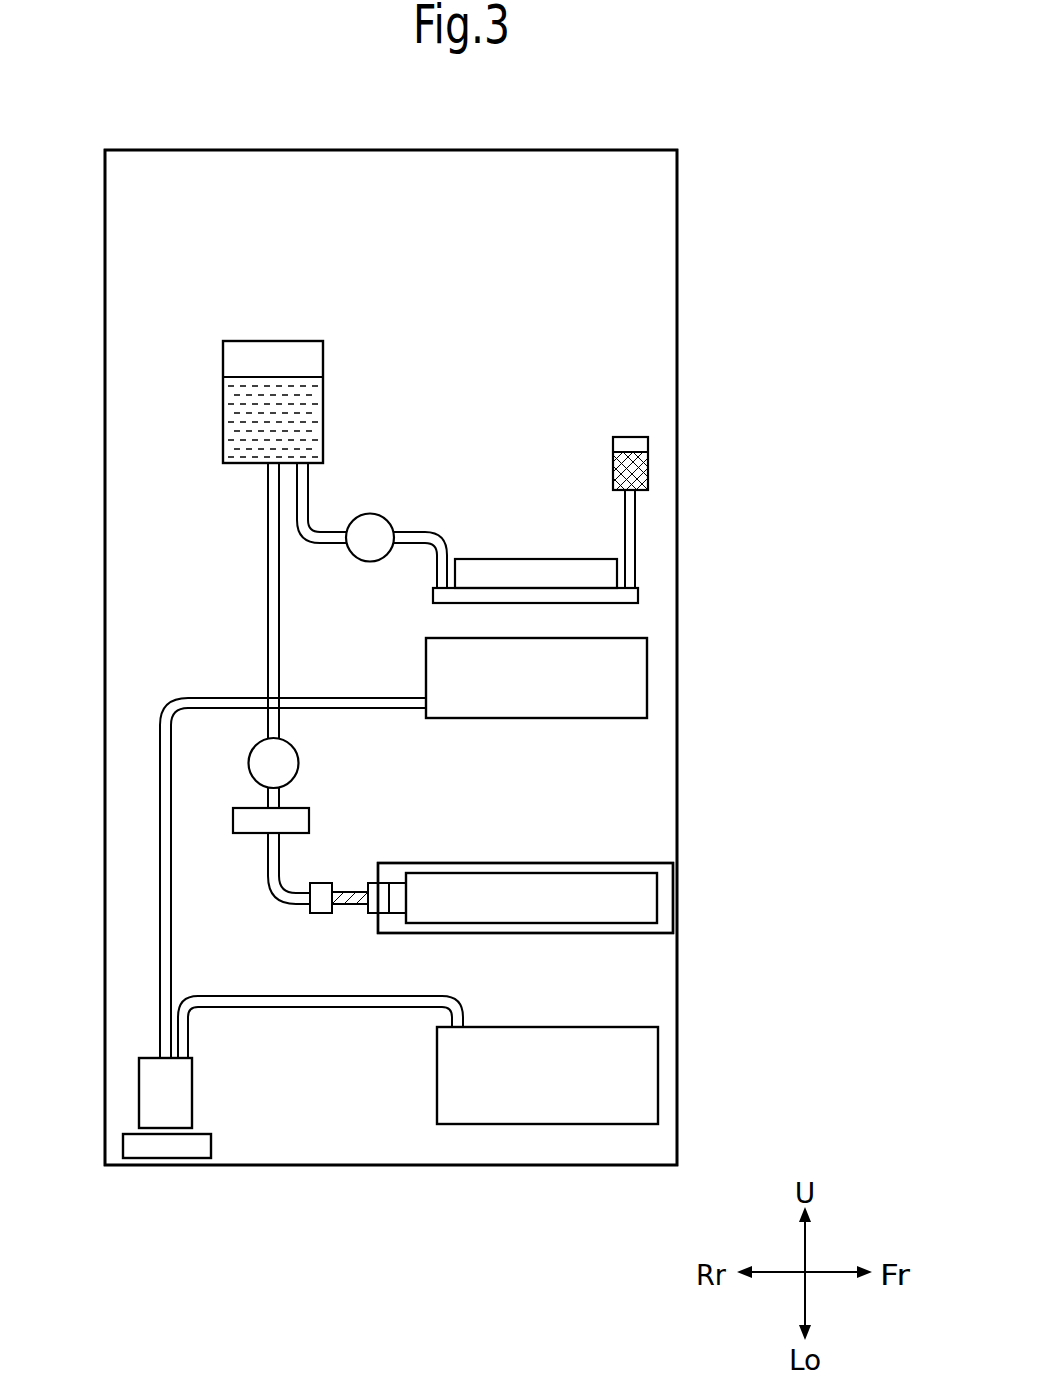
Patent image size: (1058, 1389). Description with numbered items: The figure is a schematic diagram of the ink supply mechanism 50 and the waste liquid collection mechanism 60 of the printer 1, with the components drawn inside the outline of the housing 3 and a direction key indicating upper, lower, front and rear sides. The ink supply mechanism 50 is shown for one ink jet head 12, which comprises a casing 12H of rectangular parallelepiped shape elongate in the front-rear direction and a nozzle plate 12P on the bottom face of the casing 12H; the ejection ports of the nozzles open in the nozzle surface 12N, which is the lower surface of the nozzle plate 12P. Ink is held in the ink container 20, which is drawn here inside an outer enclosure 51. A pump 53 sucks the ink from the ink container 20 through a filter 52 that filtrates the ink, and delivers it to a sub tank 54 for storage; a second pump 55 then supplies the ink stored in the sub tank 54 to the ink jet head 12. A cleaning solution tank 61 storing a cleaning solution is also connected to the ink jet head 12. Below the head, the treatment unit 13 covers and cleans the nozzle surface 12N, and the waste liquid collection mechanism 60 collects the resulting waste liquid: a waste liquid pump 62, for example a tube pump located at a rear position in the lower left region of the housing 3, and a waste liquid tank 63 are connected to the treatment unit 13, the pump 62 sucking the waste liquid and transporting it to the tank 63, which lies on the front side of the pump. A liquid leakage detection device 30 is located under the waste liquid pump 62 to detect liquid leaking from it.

The printer 1 is at (380, 108).
The housing 3 is at (100, 200).
The ink jet head 12 is at (520, 552).
The casing 12H is at (555, 558).
The nozzle plate 12P is at (638, 595).
The nozzle surface 12N is at (617, 604).
The treatment unit 13 is at (648, 705).
The ink container 20 is at (500, 873).
The liquid leakage detection device 30 is at (213, 1145).
The ink supply mechanism 50 is at (662, 822).
The battery case 51 is at (580, 863).
The filter 52 is at (310, 821).
The pump 53 is at (298, 757).
The sub tank 54 is at (325, 403).
The pump 55 is at (372, 513).
The waste liquid collection mechanism 60 is at (128, 996).
The cleaning solution tank 61 is at (630, 437).
The waste liquid pump 62 is at (195, 1085).
The waste liquid tank 63 is at (437, 1093).